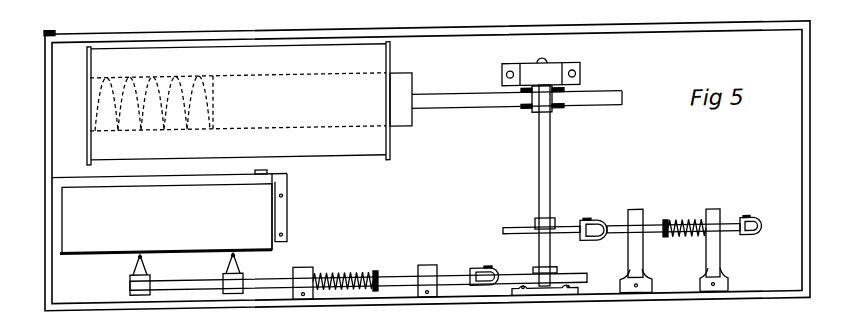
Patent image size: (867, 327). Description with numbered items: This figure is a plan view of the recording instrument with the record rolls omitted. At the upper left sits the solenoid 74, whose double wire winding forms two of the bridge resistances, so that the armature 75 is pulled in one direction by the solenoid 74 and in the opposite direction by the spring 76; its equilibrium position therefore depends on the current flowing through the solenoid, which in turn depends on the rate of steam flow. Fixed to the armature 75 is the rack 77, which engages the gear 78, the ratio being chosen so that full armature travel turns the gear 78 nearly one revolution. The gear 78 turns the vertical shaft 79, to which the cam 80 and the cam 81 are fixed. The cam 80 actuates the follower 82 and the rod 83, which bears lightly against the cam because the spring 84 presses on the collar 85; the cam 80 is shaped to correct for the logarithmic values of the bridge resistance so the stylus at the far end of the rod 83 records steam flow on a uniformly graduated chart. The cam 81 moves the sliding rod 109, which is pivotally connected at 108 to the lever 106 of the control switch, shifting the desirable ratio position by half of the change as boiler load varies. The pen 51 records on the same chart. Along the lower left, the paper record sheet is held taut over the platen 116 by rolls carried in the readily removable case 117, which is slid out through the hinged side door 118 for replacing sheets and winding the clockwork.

The pen 51 is at (132, 262).
The solenoid 74 is at (390, 47).
The armature 75 is at (403, 71).
The spring 76 is at (183, 68).
The rack 77 is at (604, 93).
The gear 78 is at (555, 113).
The shaft 79 is at (539, 178).
The cam 80 is at (575, 278).
The cam 81 is at (503, 234).
The follower 82 is at (498, 259).
The rod 83 is at (406, 270).
The spring 84 is at (354, 271).
The collar 85 is at (377, 290).
The lever 106 is at (764, 231).
The pivot 108 is at (758, 242).
The sliding rod 109 is at (660, 200).
The platen 116 is at (84, 246).
The case 117 is at (222, 188).
The hinged side door 118 is at (48, 104).